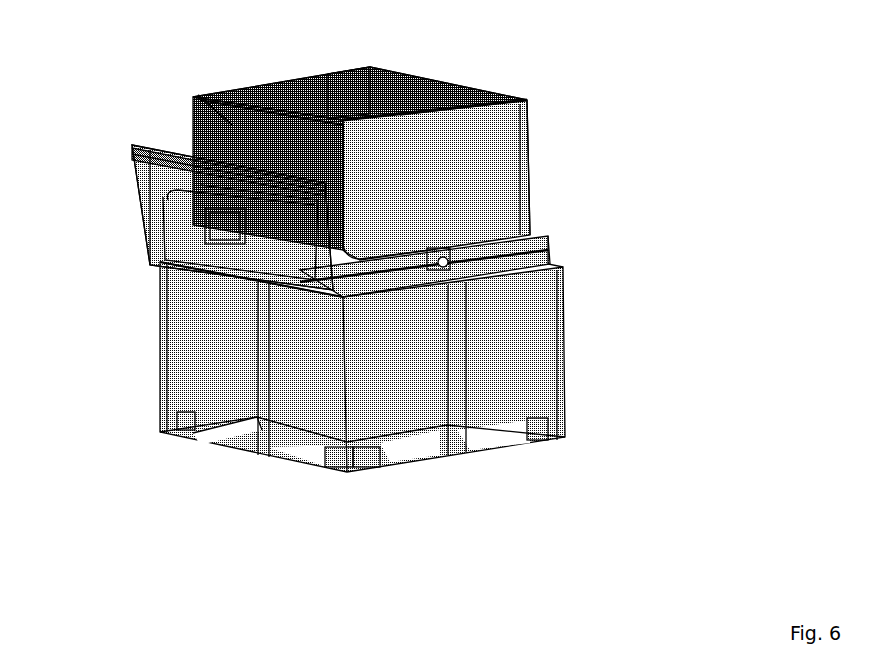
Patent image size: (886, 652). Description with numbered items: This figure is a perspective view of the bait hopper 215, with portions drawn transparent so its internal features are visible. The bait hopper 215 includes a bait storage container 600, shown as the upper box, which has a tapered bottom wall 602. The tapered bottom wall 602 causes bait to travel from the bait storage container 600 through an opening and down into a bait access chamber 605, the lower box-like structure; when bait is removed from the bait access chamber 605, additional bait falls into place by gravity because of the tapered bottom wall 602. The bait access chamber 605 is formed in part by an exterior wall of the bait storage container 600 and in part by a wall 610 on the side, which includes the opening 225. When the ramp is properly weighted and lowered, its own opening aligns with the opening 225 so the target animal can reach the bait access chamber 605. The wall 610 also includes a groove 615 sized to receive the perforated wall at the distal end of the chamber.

The bait hopper 215 is at (198, 95).
The bait storage container 600 is at (310, 100).
The tapered bottom wall 602 is at (373, 118).
The groove 615 is at (200, 155).
The wall 610 is at (173, 179).
The opening 225 is at (183, 270).
The bait access chamber 605 is at (283, 240).